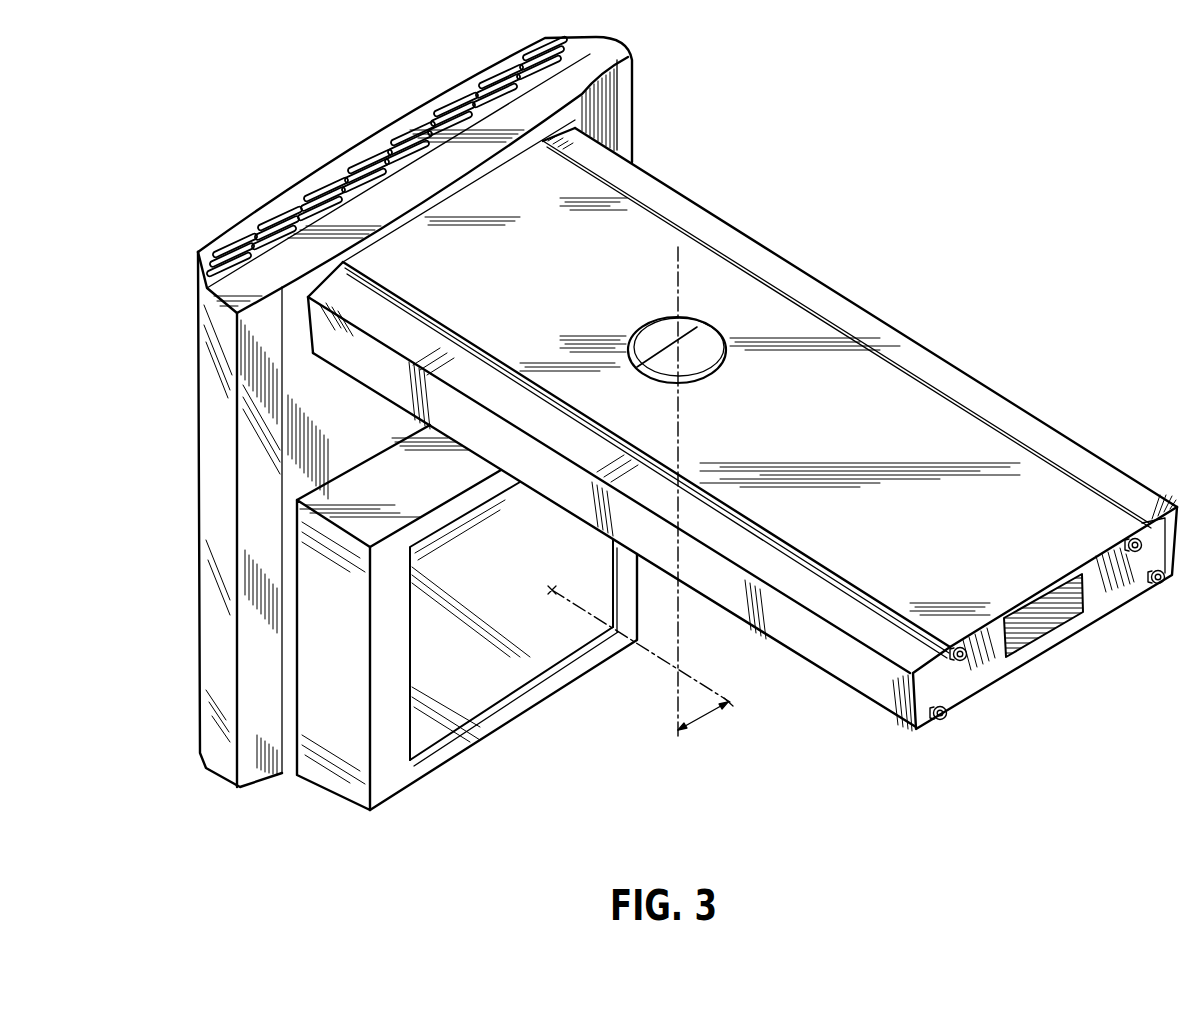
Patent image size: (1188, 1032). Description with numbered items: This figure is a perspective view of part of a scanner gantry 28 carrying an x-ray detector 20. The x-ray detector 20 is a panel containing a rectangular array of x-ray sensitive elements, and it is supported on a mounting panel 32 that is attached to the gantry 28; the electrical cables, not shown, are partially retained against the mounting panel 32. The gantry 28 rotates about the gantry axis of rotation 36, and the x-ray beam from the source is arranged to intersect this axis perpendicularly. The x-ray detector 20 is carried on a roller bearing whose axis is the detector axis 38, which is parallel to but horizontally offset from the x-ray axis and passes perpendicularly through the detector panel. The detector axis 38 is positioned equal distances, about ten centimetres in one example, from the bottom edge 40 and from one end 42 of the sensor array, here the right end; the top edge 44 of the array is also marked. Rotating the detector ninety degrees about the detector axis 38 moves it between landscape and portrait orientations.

The x-ray detector 20 is at (433, 773).
The gantry 28 is at (903, 333).
The mounting panel 32 is at (210, 437).
The gantry axis of rotation 36 is at (677, 270).
The detector axis 38 is at (693, 673).
The bottom edge 40 is at (520, 695).
The end 42 is at (610, 573).
The top edge 44 is at (495, 503).